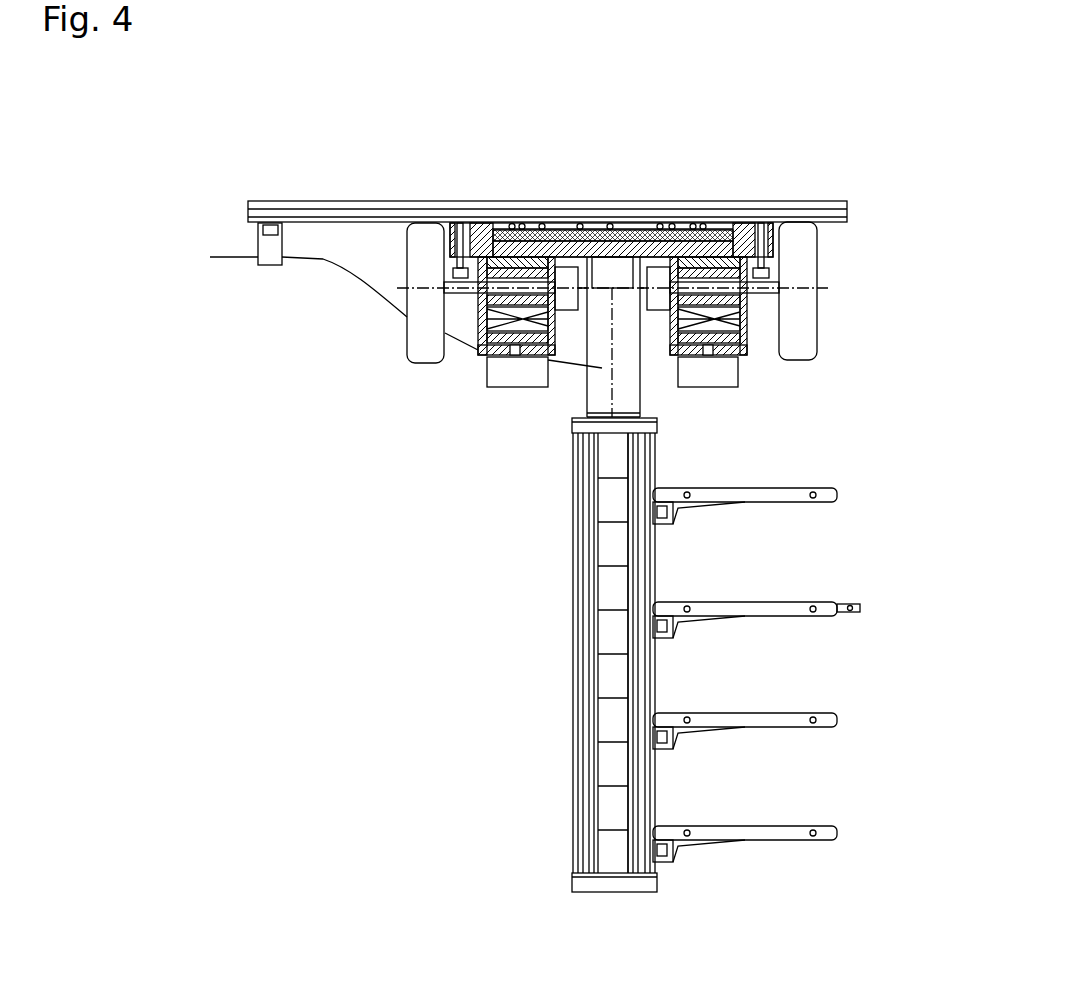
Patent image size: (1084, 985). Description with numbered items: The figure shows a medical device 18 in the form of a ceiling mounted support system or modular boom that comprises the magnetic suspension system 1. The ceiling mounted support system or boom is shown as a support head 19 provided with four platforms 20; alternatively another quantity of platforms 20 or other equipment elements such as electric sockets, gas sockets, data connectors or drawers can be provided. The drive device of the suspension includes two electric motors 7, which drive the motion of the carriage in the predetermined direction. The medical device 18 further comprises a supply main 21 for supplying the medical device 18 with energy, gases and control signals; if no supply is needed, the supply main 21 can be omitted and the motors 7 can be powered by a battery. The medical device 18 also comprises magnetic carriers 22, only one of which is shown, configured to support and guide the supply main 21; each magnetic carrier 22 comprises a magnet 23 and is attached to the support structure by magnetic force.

The magnetic suspension system 1 is at (745, 172).
The electric motors 7 is at (563, 280).
The medical device 18 is at (562, 662).
The support head 19 is at (603, 772).
The platforms 20 is at (793, 497).
The supply main 21 is at (578, 372).
The magnetic carriers 22 is at (268, 253).
The magnet 23 is at (263, 230).